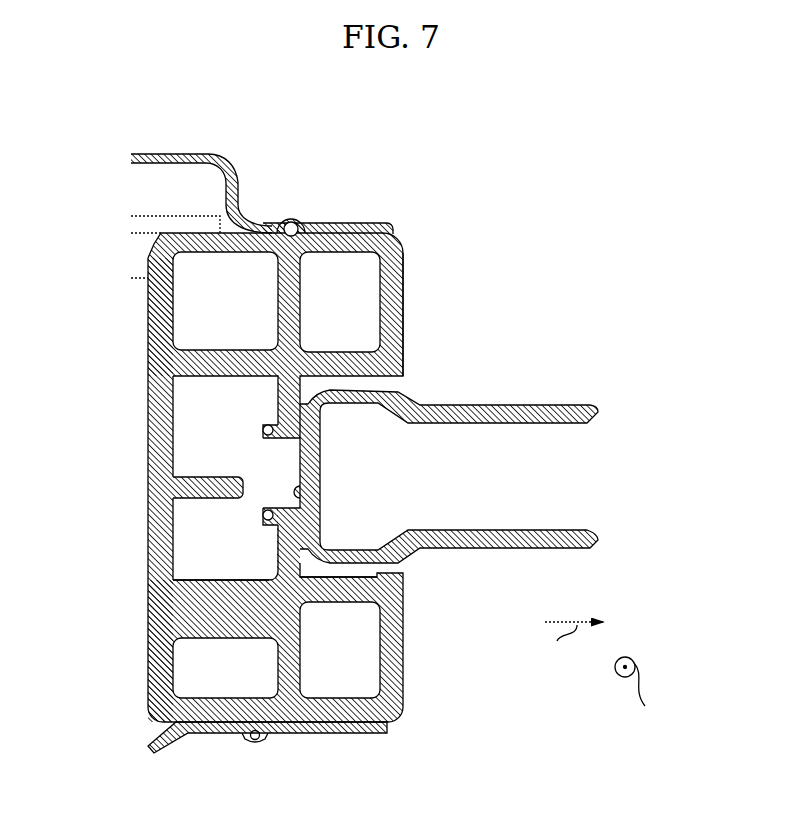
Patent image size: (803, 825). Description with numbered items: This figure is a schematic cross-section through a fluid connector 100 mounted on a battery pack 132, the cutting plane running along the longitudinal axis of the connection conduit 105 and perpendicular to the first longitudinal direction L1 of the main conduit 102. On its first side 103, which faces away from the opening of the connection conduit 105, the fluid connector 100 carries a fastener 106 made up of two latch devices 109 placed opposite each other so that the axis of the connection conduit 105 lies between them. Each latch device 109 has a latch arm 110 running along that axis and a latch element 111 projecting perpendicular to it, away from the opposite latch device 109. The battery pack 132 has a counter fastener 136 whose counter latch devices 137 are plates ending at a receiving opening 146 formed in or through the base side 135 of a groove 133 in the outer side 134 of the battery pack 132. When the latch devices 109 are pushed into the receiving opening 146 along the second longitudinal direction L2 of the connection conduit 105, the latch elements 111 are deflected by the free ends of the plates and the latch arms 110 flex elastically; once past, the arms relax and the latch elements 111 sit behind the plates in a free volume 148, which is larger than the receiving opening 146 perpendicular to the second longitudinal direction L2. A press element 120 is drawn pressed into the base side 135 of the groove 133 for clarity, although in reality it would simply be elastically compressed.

The fluid connector 100 is at (498, 272).
The main conduit 102 is at (380, 477).
The first side 103 is at (320, 501).
The connection conduit 105 is at (603, 473).
The fastener 106 is at (224, 614).
The latch devices 109 is at (253, 448).
The latch arm 110 is at (282, 447).
The latch element 111 is at (268, 430).
The press element 120 is at (303, 402).
The battery pack 132 is at (368, 212).
The groove 133 is at (358, 383).
The outer side 134 is at (405, 283).
The base side 135 is at (304, 402).
The counter fastener 136 is at (262, 557).
The counter latch devices 137 is at (276, 415).
The receiving opening 146 is at (259, 478).
The free volume 148 is at (182, 433).
The first longitudinal direction L1 is at (644, 685).
The second longitudinal direction L2 is at (574, 645).